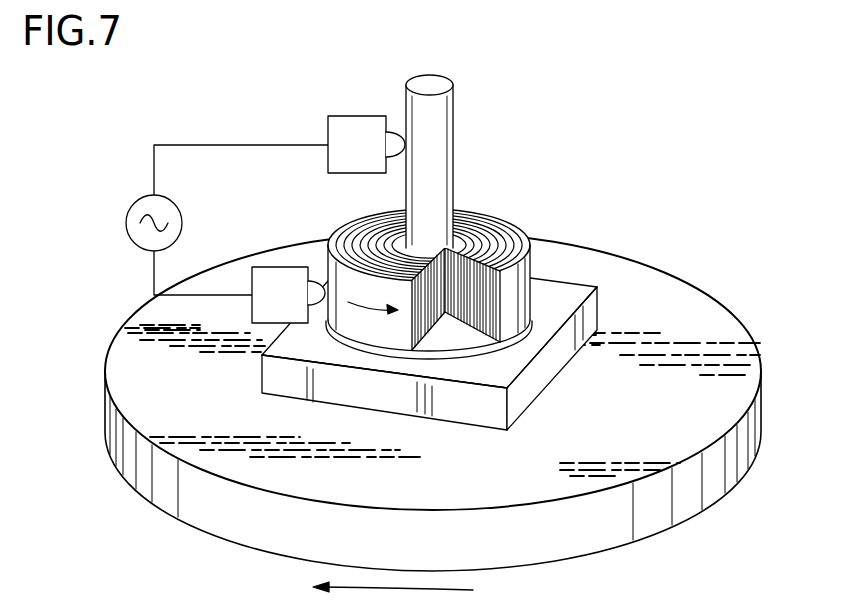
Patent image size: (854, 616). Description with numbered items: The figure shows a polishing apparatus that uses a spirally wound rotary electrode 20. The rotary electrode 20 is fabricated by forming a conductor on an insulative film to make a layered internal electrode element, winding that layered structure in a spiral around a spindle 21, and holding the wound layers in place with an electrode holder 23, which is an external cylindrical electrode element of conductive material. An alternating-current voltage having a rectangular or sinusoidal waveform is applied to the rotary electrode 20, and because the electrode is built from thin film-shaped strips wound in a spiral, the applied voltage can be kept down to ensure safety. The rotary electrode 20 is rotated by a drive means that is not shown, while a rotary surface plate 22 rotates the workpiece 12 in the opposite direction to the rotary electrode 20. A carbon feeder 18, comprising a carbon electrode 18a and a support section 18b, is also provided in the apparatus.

The workpiece 12 is at (583, 284).
The carbon feeder 18 is at (303, 169).
The carbon electrode 18a is at (392, 132).
The support section 18b is at (327, 118).
The rotary electrode 20 is at (538, 217).
The spindle 21 is at (454, 176).
The rotary surface plate 22 is at (732, 478).
The electrode holder 23 is at (572, 293).